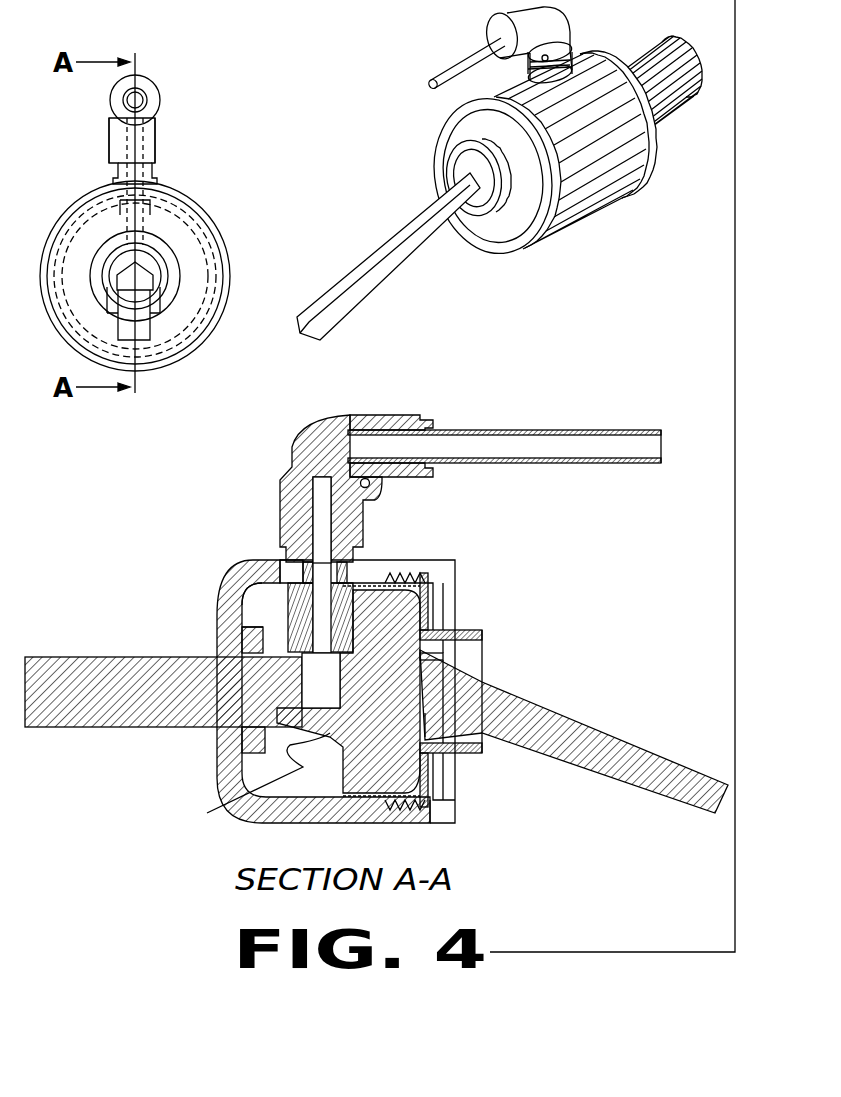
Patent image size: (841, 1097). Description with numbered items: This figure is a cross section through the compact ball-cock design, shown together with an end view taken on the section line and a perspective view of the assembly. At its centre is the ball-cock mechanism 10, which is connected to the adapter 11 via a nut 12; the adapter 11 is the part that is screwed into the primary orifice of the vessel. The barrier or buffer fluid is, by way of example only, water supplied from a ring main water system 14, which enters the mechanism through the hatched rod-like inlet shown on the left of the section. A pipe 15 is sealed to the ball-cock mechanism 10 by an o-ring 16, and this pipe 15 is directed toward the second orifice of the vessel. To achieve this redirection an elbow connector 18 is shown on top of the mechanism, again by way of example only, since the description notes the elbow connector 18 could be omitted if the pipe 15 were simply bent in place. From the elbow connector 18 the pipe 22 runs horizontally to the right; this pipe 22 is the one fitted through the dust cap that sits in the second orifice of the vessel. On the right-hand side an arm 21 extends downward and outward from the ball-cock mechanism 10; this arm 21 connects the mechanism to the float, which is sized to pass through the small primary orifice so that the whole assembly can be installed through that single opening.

The ball-cock mechanism 10 is at (292, 696).
The adapter 11 is at (472, 755).
The nut 12 is at (430, 587).
The ring main water system 14 is at (90, 690).
The pipe 15 is at (280, 595).
The o-ring 16 is at (272, 632).
The elbow connector 18 is at (302, 431).
The arm 21 is at (570, 727).
The pipe 22 is at (548, 428).